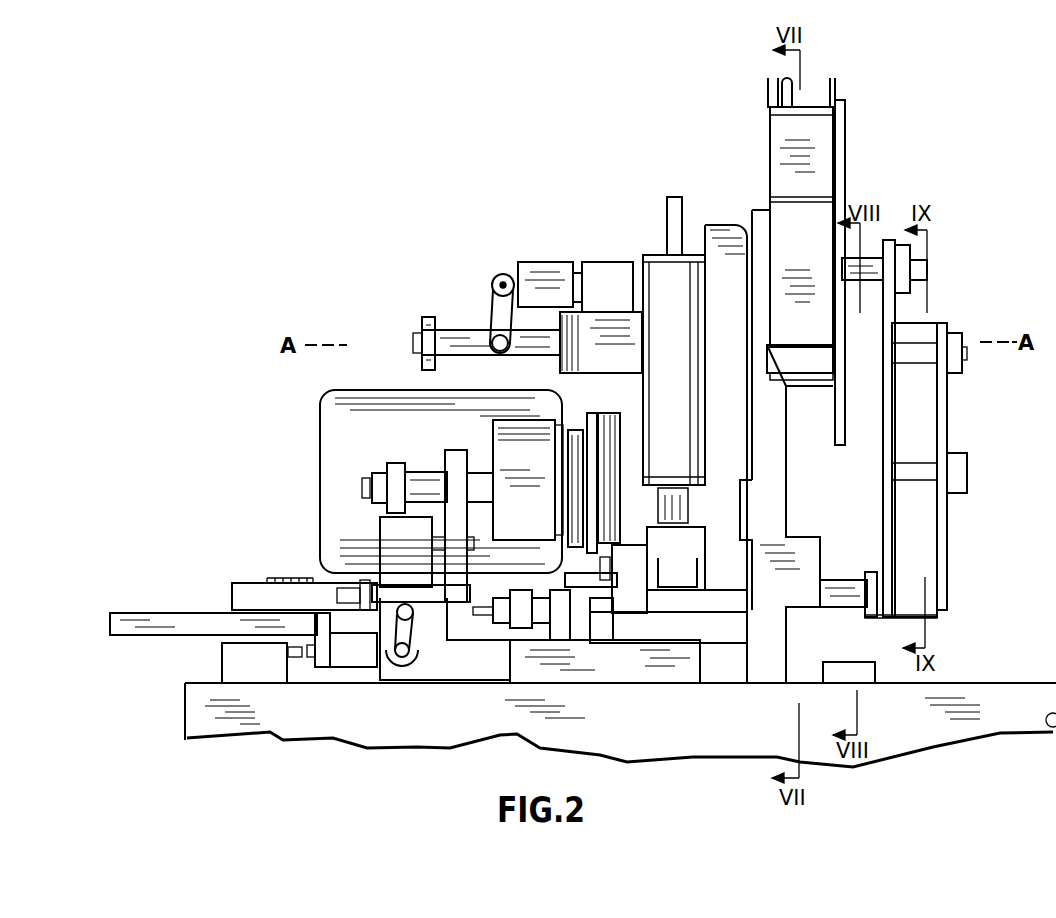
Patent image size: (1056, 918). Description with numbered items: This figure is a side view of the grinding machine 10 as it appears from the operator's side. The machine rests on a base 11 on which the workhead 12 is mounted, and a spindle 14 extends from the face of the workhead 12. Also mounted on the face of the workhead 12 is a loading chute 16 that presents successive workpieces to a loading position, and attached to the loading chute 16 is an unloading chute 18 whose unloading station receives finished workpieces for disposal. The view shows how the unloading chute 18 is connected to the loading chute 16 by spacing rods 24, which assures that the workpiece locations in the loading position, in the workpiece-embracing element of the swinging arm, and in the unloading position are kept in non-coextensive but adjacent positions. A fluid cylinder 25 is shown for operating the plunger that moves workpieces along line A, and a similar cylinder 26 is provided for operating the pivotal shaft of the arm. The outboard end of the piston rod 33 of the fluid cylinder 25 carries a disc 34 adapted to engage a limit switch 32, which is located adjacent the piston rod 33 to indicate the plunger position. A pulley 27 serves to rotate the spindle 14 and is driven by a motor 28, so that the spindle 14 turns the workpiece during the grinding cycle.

The grinding machine 10 is at (245, 582).
The base 11 is at (190, 712).
The workhead 12 is at (712, 230).
The spindle 14 is at (480, 477).
The loading chute 16 is at (782, 127).
The unloading chute 18 is at (930, 542).
The spacing rods 24 is at (835, 590).
The fluid cylinder 25 is at (608, 318).
The cylinder 26 is at (663, 357).
The pulley 27 is at (600, 430).
The motor 28 is at (343, 410).
The limit switch 32 is at (492, 274).
The piston rod 33 is at (455, 343).
The disc 34 is at (423, 362).